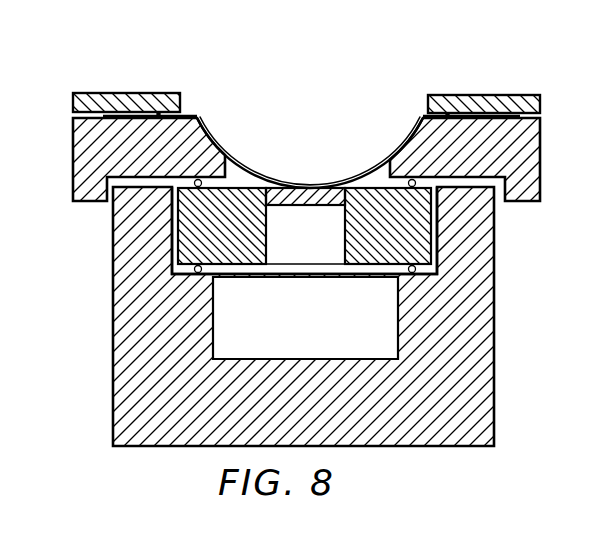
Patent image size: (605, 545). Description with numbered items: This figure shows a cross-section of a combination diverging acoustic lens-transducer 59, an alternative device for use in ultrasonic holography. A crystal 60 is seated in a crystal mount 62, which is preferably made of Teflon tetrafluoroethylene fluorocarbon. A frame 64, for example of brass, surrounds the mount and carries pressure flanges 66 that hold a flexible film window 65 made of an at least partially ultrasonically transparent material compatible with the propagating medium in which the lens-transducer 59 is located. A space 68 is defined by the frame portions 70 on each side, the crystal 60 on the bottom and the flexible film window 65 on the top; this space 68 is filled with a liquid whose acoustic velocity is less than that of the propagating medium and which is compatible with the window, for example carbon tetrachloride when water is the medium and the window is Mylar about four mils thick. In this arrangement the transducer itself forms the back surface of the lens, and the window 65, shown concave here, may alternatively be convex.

The combination diverging acoustic lens-transducer 59 is at (306, 234).
The crystal 60 is at (278, 203).
The crystal mount 62 is at (345, 250).
The frame 64 is at (494, 402).
The flexible film window 65 is at (263, 178).
The pressure flanges 66 is at (73, 101).
The space 68 is at (368, 174).
The frame portions 70 is at (73, 160).